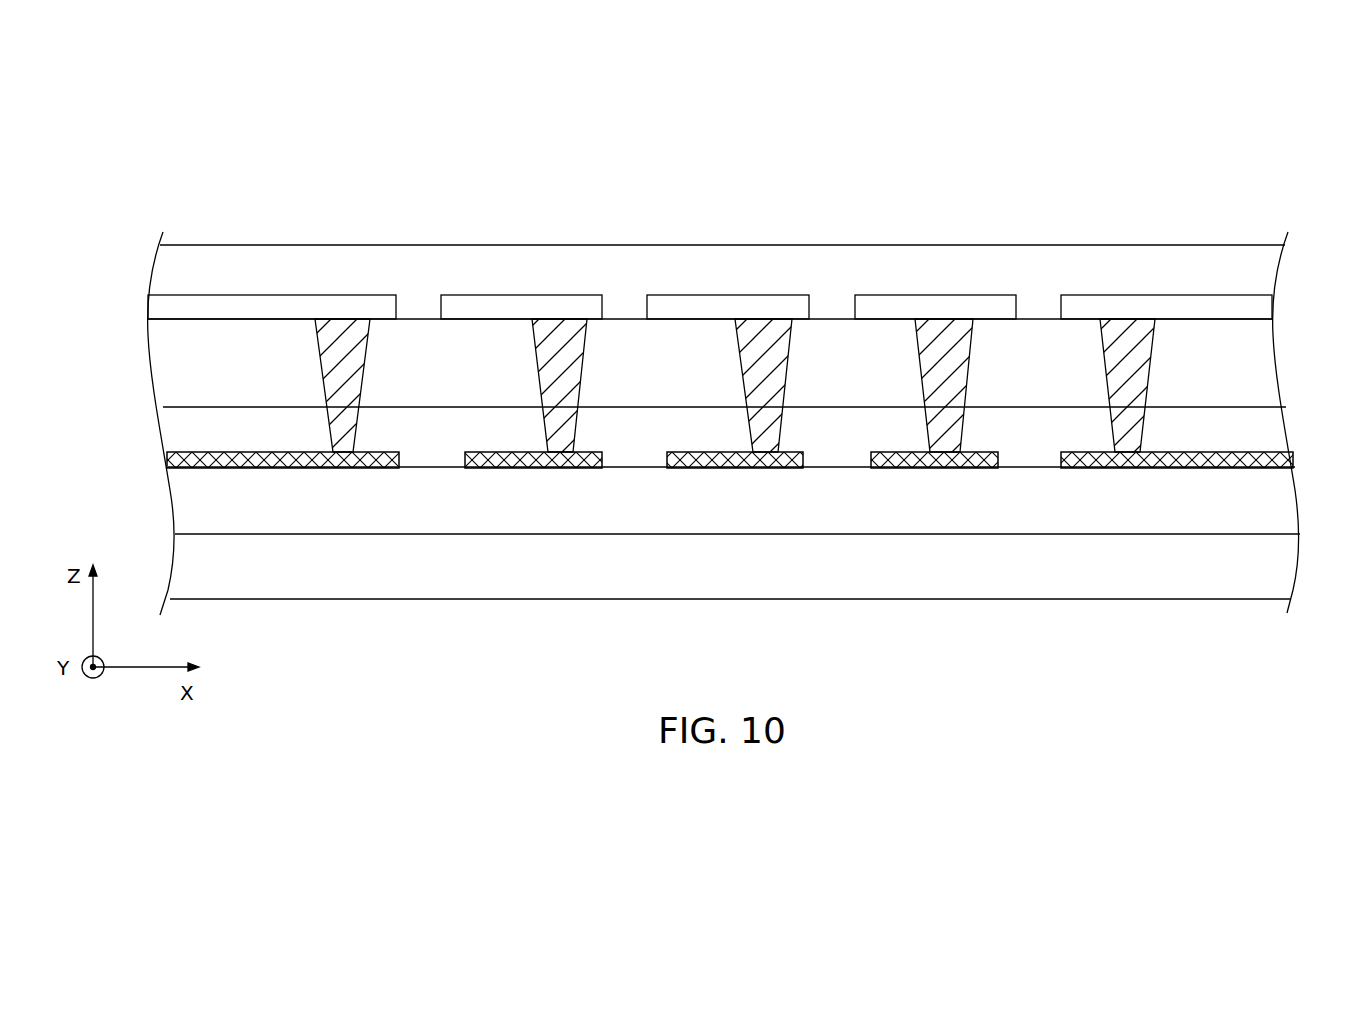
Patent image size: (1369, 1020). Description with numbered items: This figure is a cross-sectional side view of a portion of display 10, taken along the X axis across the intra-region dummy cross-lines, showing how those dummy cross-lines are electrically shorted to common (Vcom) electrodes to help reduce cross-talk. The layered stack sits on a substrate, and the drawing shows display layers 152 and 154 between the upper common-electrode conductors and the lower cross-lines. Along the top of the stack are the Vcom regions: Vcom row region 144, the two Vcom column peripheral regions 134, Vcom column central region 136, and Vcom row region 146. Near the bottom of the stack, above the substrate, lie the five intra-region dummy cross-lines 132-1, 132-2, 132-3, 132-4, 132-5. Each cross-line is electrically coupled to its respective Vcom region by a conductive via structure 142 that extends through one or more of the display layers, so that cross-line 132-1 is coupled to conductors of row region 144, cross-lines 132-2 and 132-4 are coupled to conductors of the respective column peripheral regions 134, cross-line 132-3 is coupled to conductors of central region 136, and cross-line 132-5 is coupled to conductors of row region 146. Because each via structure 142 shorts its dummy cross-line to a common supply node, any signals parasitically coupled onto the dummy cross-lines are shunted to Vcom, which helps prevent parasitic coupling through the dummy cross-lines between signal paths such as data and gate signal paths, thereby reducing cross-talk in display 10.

The display 10 is at (1244, 132).
The Vcom row region 144 is at (333, 295).
The Vcom column peripheral region 134 is at (550, 295).
The Vcom column central region 136 is at (731, 295).
The Vcom row region 146 is at (1143, 295).
The via structure 142 is at (365, 366).
The dielectric layer 152 is at (1265, 357).
The dielectric layer 154 is at (1278, 427).
The intra-region cross-line 132-1 is at (320, 469).
The intra-region cross-line 132-2 is at (517, 469).
The intra-region cross-line 132-3 is at (733, 469).
The intra-region cross-line 132-4 is at (935, 469).
The intra-region cross-line 132-5 is at (1230, 469).